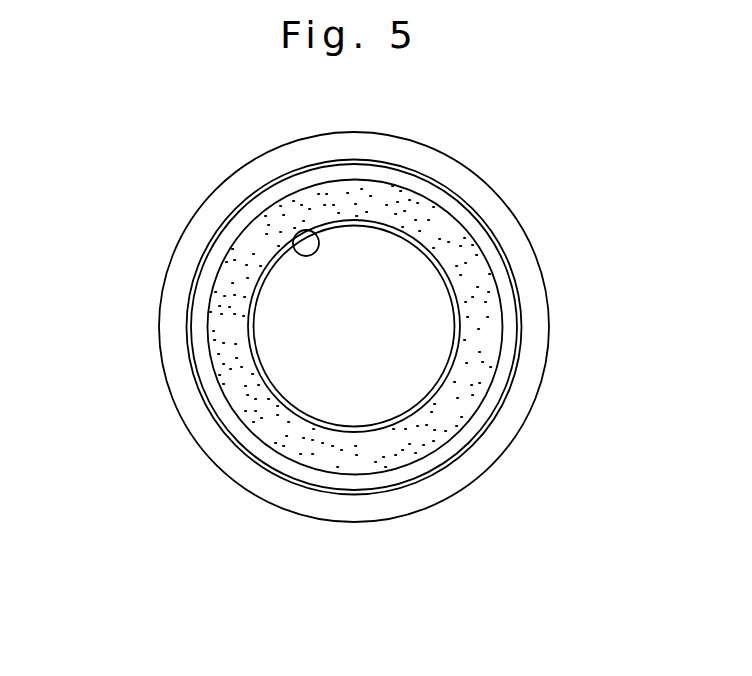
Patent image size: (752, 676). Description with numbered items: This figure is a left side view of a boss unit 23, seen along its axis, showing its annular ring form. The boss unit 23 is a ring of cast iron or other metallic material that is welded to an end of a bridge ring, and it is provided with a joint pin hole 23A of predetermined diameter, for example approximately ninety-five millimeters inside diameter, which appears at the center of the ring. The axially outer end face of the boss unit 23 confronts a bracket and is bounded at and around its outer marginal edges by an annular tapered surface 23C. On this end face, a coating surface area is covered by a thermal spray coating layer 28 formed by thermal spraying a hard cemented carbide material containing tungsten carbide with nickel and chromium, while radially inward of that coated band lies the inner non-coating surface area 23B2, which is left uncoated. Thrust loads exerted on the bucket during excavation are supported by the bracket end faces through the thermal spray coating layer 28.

The boss unit 23 is at (483, 176).
The joint pin hole 23A is at (293, 238).
The inner non-coating surface area 23B2 is at (253, 355).
The annular tapered surface 23C is at (365, 482).
The thermal spray coating layer 28 is at (497, 348).